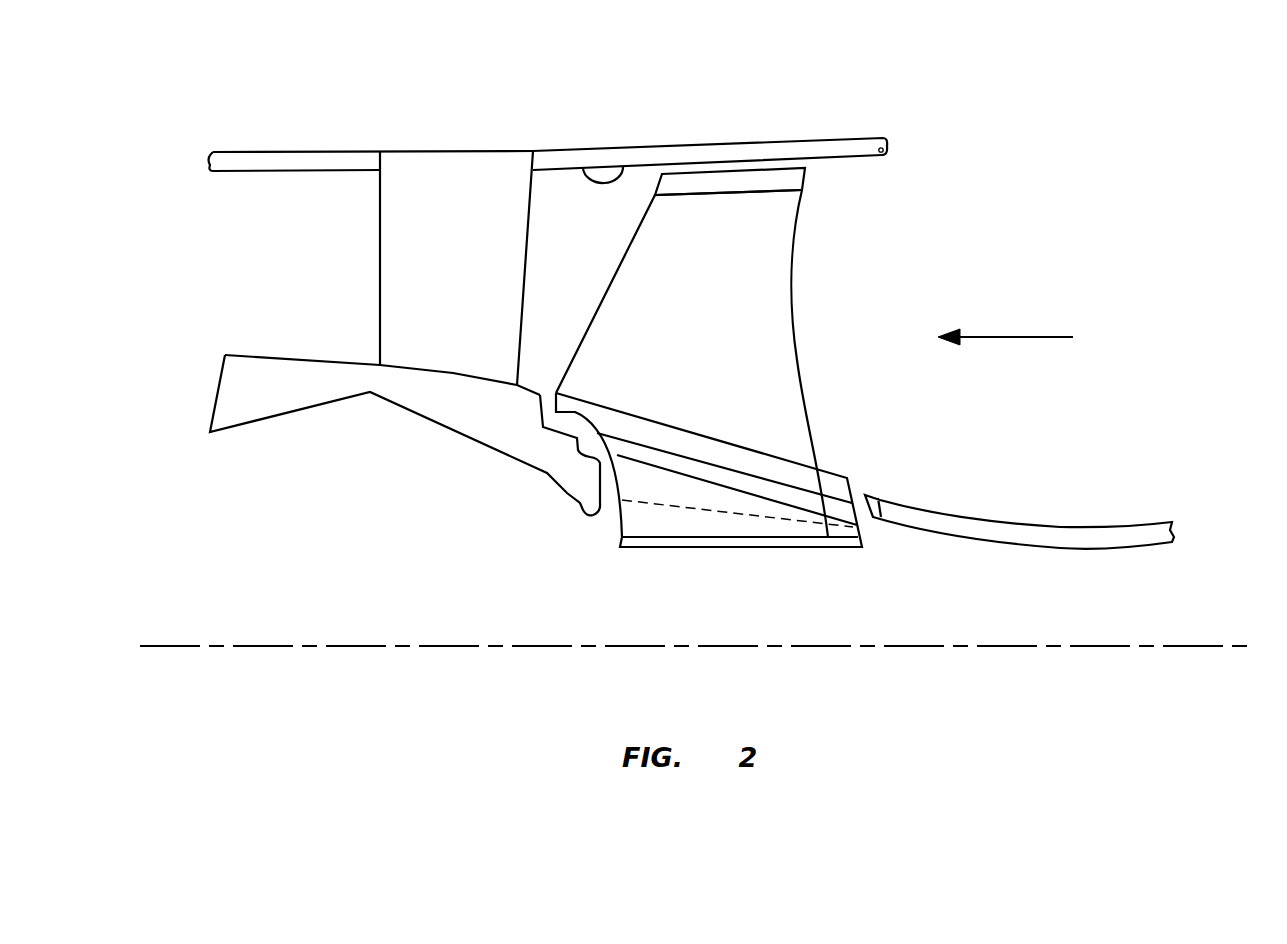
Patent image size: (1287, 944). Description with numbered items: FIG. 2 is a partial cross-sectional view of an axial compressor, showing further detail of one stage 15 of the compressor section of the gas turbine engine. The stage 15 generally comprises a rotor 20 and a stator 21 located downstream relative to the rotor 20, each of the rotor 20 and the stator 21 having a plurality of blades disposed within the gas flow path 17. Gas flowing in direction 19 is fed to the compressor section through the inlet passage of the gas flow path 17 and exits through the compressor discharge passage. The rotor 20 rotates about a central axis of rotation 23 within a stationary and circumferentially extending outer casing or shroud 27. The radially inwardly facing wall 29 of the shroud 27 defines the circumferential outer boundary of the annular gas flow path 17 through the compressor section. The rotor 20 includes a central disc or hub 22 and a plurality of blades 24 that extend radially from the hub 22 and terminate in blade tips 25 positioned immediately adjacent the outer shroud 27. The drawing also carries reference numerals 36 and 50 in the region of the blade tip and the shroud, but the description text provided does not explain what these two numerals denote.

The stage 15 is at (541, 101).
The gas flow path 17 is at (588, 283).
The flow direction 19 is at (1028, 336).
The rotor 20 is at (730, 313).
The stator 21 is at (371, 232).
The central disc or hub 22 is at (805, 481).
The central axis of rotation 23 is at (1222, 636).
The blades 24 is at (768, 369).
The blade tips 25 is at (750, 179).
The outer casing or shroud 27 is at (684, 158).
The radially inwardly facing wall 29 is at (624, 168).
The shroud seal surface 36 is at (804, 178).
The blade outer air seal segment 50 is at (793, 157).